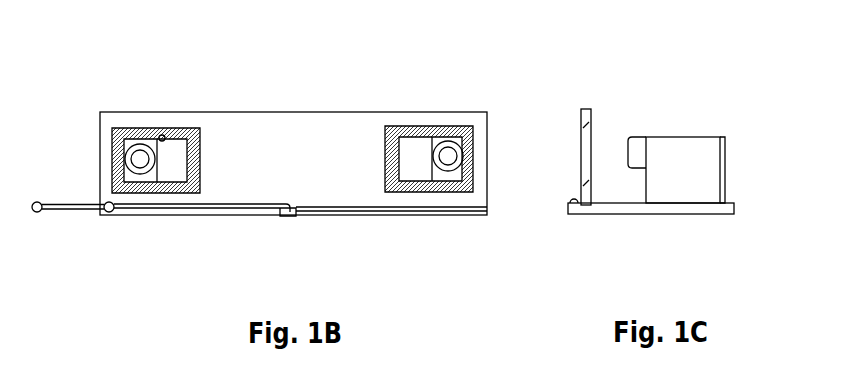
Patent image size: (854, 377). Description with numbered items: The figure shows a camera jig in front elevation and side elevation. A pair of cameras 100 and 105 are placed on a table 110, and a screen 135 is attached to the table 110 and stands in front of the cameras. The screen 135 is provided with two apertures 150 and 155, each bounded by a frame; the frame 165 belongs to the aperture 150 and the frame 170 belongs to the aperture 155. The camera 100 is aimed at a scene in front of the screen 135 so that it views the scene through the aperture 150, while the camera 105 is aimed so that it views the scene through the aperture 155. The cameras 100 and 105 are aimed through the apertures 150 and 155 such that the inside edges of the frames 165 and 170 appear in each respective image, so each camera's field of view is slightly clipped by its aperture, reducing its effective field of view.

In FIG. 1B, the camera 100 is at (455, 133).
In FIG. 1B, the camera 105 is at (137, 139).
In FIG. 1C, the table 110 is at (687, 210).
In FIG. 1B, the screen 135 is at (303, 162).
In FIG. 1C, the screen 135 is at (593, 117).
In FIG. 1B, the aperture 150 is at (405, 150).
In FIG. 1C, the aperture 150 is at (682, 137).
In FIG. 1B, the aperture 155 is at (178, 152).
In FIG. 1B, the frame 165 is at (417, 142).
In FIG. 1B, the frame 170 is at (160, 135).